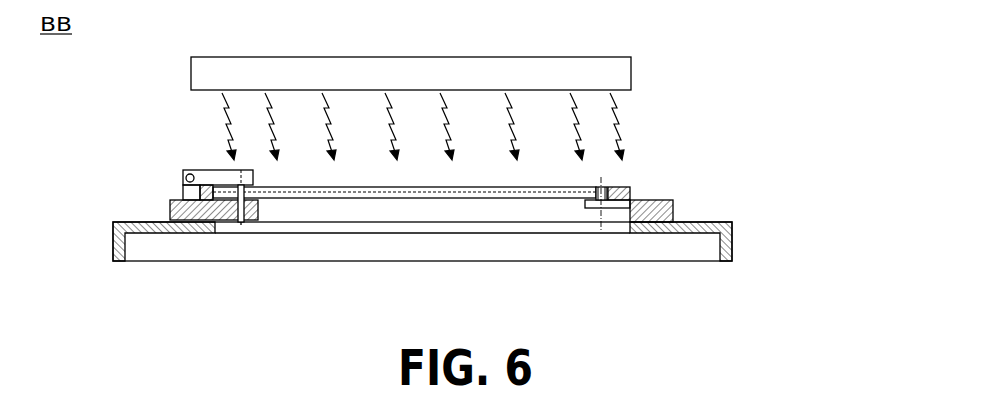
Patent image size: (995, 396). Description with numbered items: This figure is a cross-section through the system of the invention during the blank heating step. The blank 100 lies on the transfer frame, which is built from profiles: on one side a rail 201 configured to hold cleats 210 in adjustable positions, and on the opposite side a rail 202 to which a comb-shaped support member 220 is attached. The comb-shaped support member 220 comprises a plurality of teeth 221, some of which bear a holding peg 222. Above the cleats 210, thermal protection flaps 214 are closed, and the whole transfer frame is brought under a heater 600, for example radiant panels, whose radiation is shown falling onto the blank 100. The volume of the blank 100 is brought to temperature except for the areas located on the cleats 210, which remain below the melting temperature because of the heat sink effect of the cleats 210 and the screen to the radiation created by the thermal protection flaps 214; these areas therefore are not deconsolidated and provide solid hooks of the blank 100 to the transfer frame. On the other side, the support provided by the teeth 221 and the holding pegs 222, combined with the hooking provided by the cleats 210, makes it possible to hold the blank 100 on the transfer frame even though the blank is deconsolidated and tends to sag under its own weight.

The heater 600 is at (398, 57).
The blank 100 is at (422, 198).
The rail 201 is at (113, 240).
The rail 202 is at (733, 243).
The cleat 210 is at (170, 210).
The thermal protection flap 214 is at (217, 170).
The comb-shaped support member 220 is at (673, 210).
The tooth 221 is at (605, 203).
The holding peg 222 is at (630, 187).